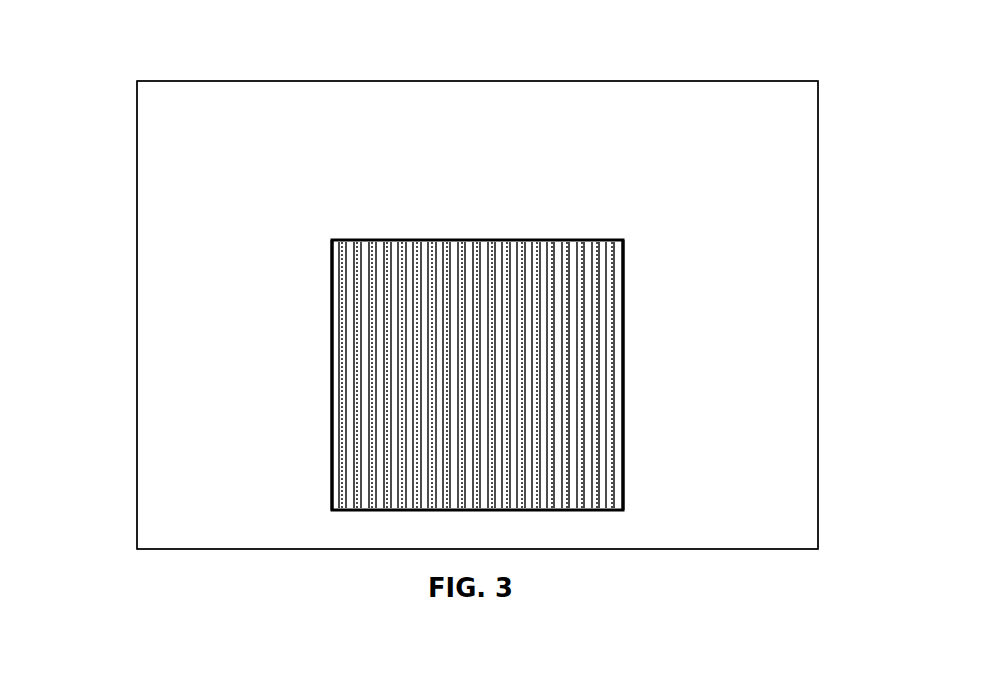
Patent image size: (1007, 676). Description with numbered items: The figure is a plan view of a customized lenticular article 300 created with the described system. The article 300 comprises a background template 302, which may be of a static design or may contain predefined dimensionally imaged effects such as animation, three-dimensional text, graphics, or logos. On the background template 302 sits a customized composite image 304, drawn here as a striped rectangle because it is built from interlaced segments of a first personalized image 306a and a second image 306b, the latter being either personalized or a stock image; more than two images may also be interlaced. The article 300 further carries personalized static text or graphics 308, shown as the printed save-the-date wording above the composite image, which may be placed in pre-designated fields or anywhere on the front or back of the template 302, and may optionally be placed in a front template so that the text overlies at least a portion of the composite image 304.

The customized lenticular article 300 is at (137, 81).
The background template 302 is at (777, 464).
The customized composite image 304 is at (607, 305).
The first personalized image 306a is at (335, 512).
The second personalized or stock image 306b is at (600, 512).
The personalized static text or graphics 308 is at (253, 172).